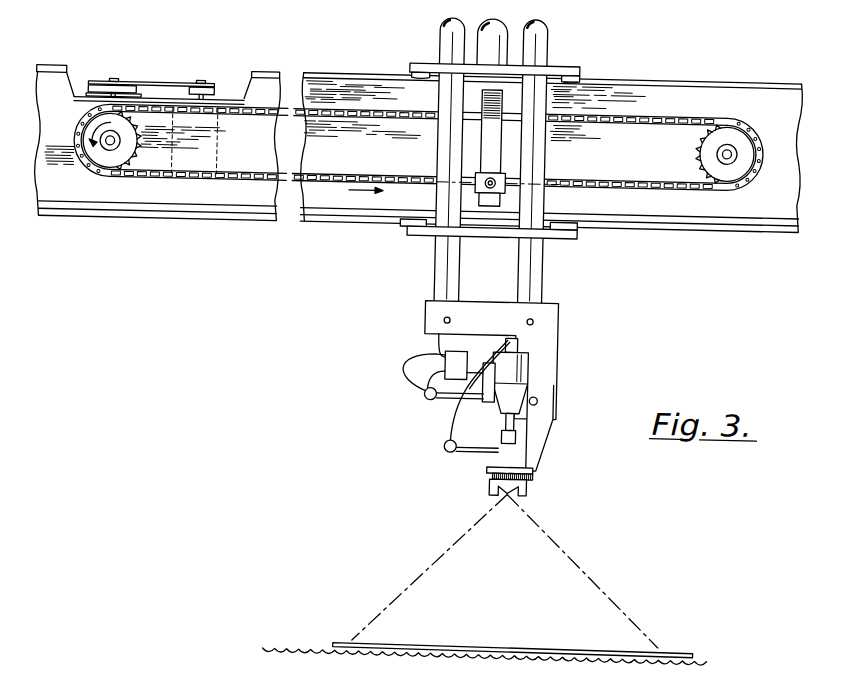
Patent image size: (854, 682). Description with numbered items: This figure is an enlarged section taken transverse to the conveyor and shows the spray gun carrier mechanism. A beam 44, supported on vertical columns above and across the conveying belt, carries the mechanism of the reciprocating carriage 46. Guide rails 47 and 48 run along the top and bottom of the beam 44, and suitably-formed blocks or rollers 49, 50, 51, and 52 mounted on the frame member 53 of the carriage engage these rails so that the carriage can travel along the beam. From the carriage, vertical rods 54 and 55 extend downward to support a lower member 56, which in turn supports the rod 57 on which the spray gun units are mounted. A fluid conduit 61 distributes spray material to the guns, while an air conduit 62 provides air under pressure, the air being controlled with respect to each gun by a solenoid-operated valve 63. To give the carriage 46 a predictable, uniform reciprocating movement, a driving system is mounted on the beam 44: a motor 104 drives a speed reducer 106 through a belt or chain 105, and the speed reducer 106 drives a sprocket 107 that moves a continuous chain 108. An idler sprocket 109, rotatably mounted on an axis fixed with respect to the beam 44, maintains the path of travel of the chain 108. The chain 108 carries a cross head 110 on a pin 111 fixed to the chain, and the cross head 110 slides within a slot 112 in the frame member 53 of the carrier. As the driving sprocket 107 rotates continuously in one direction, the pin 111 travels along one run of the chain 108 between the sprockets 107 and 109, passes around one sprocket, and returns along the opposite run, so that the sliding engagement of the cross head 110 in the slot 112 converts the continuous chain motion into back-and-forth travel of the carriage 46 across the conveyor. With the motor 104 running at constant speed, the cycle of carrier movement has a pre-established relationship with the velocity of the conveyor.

The beam 44 is at (706, 93).
The reciprocating carriage 46 is at (574, 64).
The guide rail 47 is at (639, 225).
The guide rail 48 is at (641, 74).
The block or roller 49 is at (576, 75).
The block or roller 50 is at (411, 72).
The block or roller 51 is at (409, 230).
The block or roller 52 is at (579, 231).
The frame member 53 is at (559, 60).
The vertical rod 54 is at (462, 258).
The vertical rod 55 is at (523, 269).
The lower member 56 is at (564, 321).
The rod 57 is at (546, 396).
The fluid conduit 61 is at (450, 448).
The air conduit 62 is at (433, 399).
The solenoid-operated valve 63 is at (448, 358).
The motor 104 is at (202, 88).
The belt or chain 105 is at (154, 88).
The speed reducer 106 is at (110, 87).
The sprocket 107 is at (100, 169).
The continuous chain 108 is at (366, 116).
The idler sprocket 109 is at (707, 142).
The cross head 110 is at (508, 177).
The pin 111 is at (484, 177).
The slot 112 is at (503, 147).